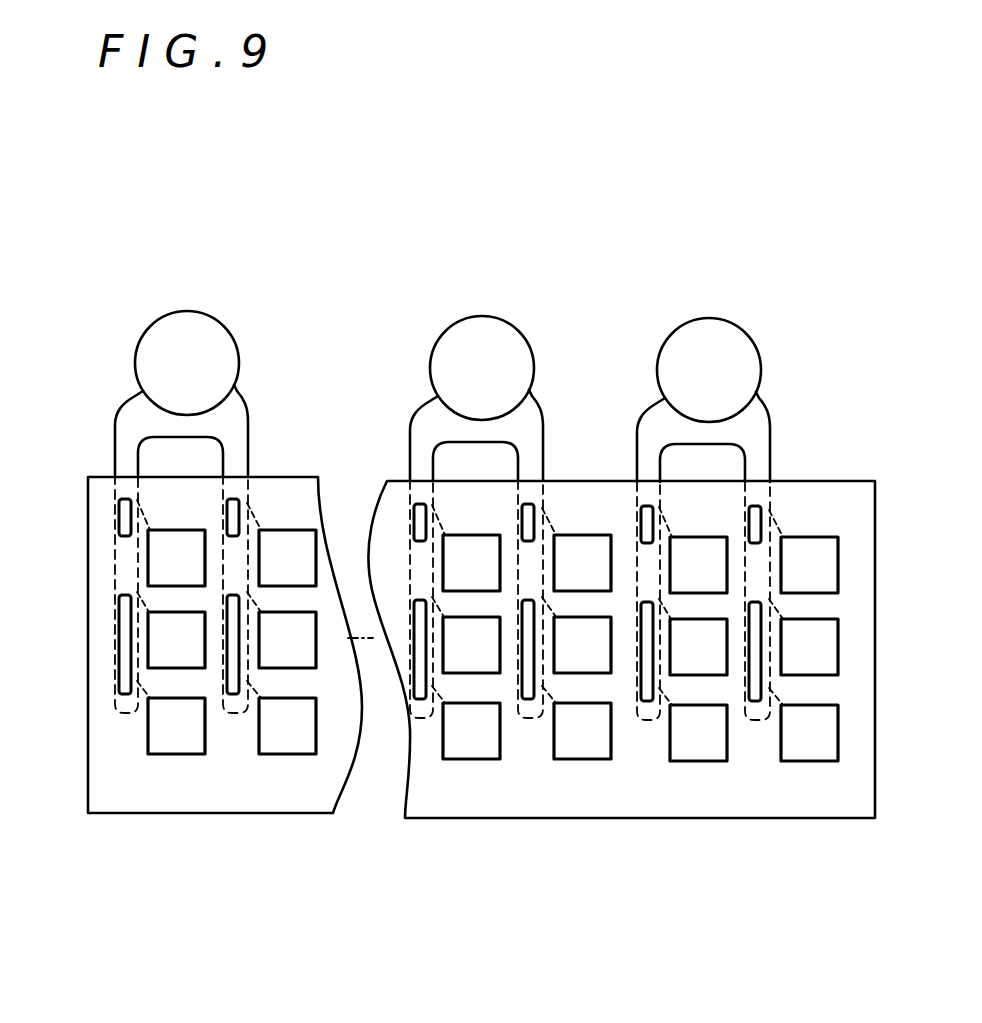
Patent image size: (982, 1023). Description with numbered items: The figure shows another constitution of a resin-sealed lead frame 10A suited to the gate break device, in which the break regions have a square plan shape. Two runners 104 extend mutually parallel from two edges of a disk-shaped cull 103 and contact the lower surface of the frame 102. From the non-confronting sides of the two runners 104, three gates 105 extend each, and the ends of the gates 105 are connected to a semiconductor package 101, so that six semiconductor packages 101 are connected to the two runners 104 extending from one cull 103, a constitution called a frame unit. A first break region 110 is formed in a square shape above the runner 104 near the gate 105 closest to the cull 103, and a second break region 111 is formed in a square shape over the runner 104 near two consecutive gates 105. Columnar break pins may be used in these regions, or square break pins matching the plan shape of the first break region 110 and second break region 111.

The resin-sealed lead frame 10A is at (775, 300).
The semiconductor package 101 is at (810, 760).
The frame 102 is at (642, 800).
The cull 103 is at (733, 350).
The runner 104 is at (758, 448).
The gate 105 is at (775, 525).
The first break region 110 is at (120, 513).
The second break region 111 is at (130, 660).